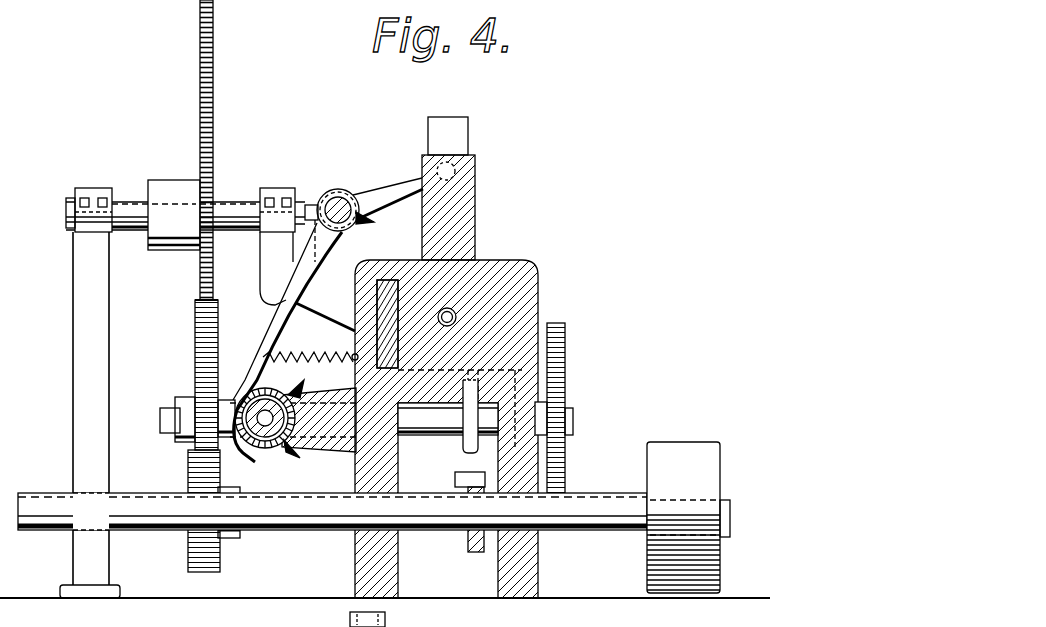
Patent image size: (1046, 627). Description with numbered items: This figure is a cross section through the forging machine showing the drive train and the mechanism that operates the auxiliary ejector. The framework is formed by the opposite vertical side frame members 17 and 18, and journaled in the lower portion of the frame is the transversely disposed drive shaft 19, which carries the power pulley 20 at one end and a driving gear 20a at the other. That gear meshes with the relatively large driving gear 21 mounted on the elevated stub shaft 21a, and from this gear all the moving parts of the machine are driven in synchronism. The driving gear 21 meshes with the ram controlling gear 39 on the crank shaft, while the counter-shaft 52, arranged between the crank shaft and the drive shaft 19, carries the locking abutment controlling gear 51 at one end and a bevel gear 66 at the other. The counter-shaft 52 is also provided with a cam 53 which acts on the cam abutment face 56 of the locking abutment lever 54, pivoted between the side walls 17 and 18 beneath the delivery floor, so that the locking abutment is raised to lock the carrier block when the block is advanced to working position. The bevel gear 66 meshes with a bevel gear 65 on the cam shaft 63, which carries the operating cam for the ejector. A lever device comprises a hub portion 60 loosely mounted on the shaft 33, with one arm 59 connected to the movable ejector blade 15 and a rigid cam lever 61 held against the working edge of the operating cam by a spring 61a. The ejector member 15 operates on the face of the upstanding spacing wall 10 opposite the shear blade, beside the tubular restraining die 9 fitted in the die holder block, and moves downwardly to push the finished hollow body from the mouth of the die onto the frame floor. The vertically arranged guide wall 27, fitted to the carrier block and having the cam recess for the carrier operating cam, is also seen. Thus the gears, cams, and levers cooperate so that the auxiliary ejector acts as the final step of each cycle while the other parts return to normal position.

The tubular restraining die 9 is at (488, 315).
The upstanding spacing wall 10 is at (455, 218).
The auxiliary ejector member 15 is at (448, 136).
The vertical side frame member 17 is at (362, 556).
The vertical side frame member 18 is at (528, 556).
The drive shaft 19 is at (52, 480).
The power pulley 20 is at (676, 450).
The driving gear 20a is at (190, 476).
The driving gear 21 is at (214, 100).
The stub shaft 21a is at (238, 212).
The guide wall 27 is at (378, 301).
The shaft 33 is at (360, 224).
The ram controlling gear 39 is at (195, 366).
The locking abutment controlling gear 51 is at (570, 410).
The counter-shaft 52 is at (162, 418).
The cam 53 is at (462, 440).
The locking abutment lever 54 is at (468, 540).
The cam abutment face 56 is at (457, 478).
The arm 59 is at (385, 188).
The hub portion 60 is at (332, 193).
The cam lever 61 is at (272, 326).
The spring 61a is at (310, 340).
The cam shaft 63 is at (276, 446).
The bevel gear 65 is at (264, 448).
The bevel gear 66 is at (298, 388).